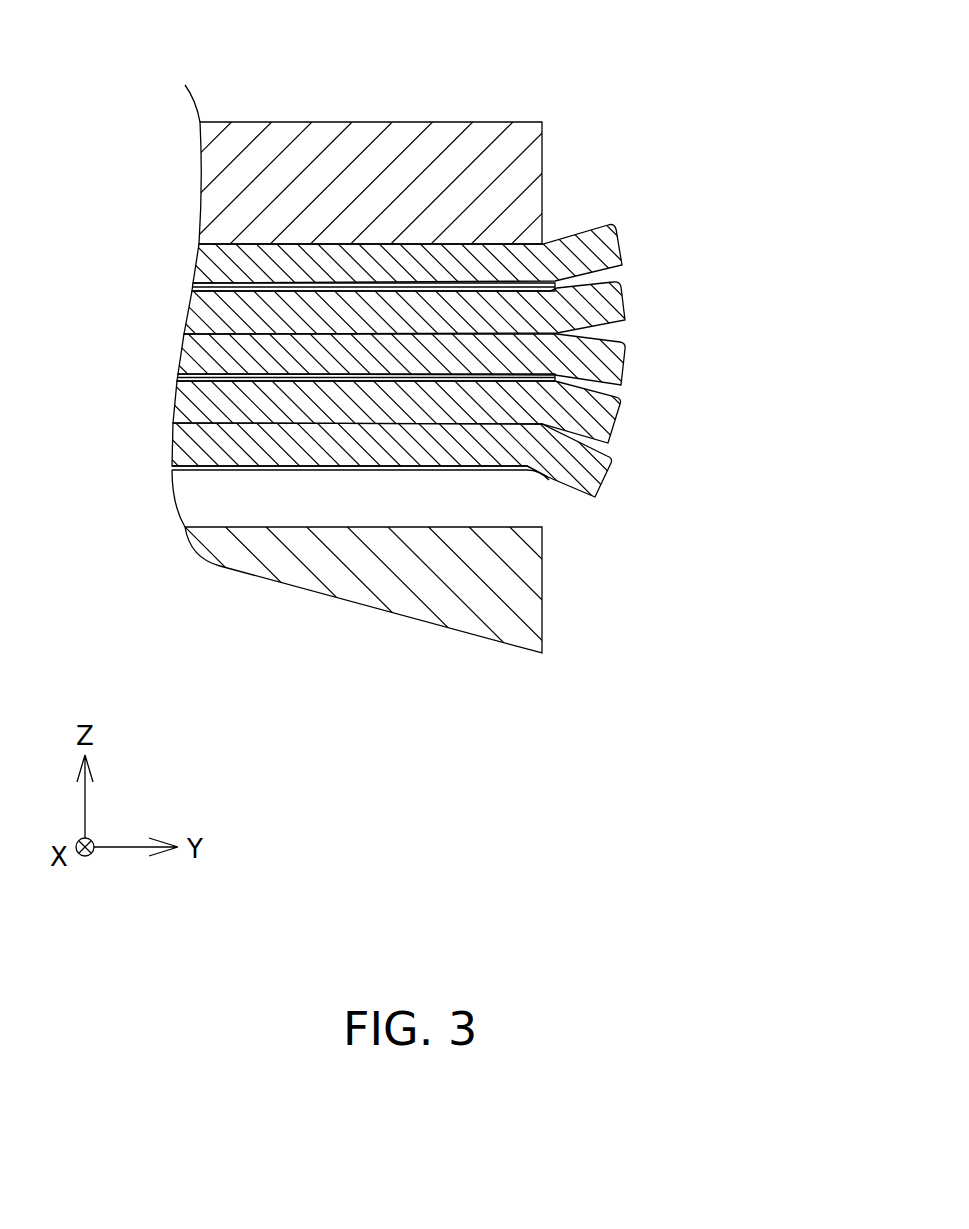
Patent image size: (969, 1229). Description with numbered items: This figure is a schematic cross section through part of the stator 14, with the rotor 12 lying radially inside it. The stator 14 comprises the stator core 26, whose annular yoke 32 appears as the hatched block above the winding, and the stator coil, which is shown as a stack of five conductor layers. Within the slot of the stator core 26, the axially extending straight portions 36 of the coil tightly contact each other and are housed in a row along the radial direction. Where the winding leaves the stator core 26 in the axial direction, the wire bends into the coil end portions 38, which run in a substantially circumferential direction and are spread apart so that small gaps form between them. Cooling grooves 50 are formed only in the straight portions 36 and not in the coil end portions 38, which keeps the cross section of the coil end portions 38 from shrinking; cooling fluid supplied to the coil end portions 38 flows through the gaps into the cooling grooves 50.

The rotor 12 is at (525, 599).
The stator 14 is at (553, 183).
The stator core 26 is at (372, 183).
The yoke 32 is at (412, 153).
The straight portion 36 is at (314, 313).
The coil end portion 38 is at (603, 307).
The cooling groove 50 is at (193, 288).